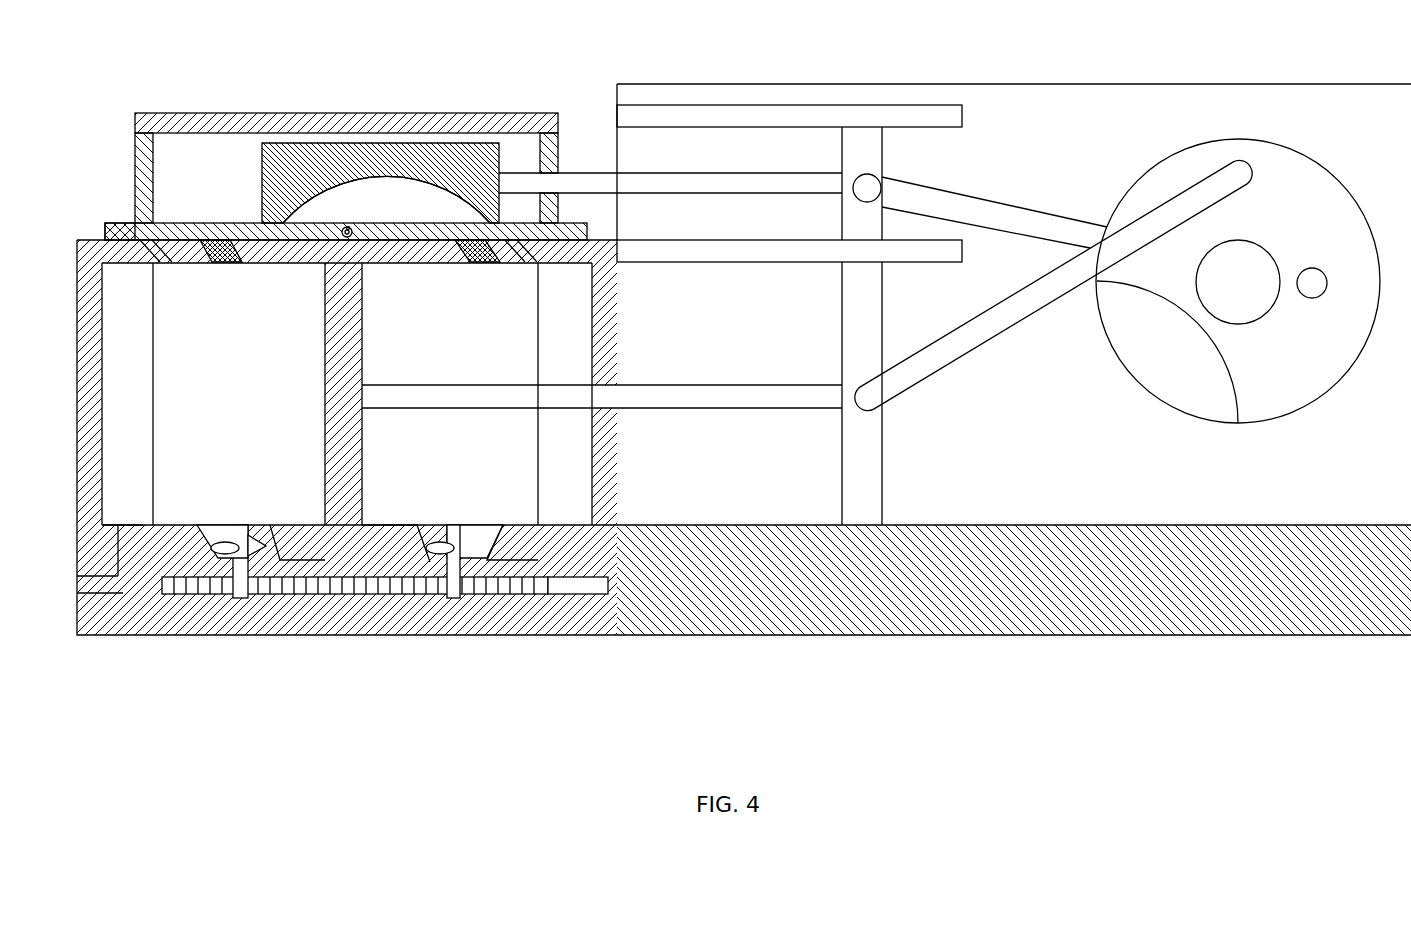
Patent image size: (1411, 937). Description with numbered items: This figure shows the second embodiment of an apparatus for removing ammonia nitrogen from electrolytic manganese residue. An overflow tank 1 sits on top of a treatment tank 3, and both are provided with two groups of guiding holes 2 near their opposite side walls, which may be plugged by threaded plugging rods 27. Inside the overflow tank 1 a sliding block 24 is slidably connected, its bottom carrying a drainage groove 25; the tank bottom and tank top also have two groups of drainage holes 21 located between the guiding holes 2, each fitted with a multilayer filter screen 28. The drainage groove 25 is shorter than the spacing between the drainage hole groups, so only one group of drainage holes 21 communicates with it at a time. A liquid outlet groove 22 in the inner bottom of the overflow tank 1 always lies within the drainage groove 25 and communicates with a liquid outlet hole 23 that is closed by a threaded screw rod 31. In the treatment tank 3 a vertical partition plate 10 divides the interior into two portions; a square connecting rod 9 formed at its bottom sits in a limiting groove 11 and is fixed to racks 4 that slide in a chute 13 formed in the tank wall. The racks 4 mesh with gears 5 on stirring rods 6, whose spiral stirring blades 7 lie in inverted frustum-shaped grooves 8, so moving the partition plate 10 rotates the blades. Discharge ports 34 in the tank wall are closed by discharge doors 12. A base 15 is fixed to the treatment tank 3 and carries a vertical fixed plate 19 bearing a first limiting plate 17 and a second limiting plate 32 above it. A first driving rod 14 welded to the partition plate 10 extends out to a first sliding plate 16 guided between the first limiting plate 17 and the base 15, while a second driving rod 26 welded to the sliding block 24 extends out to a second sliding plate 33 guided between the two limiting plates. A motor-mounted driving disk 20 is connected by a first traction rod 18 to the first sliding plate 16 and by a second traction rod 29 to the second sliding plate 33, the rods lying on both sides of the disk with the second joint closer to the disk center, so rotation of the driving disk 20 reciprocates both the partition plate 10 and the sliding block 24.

The overflow tank 1 is at (137, 143).
The guiding holes 2 is at (137, 198).
The treatment tank 3 is at (117, 628).
The racks 4 is at (177, 595).
The gears 5 is at (220, 598).
The stirring rods 6 is at (236, 602).
The stirring blades 7 is at (247, 535).
The grooves 8 is at (268, 535).
The connecting rod 9 is at (357, 503).
The partition plate 10 is at (368, 528).
The limiting groove 11 is at (505, 562).
The discharge doors 12 is at (563, 512).
The chute 13 is at (565, 588).
The first driving rod 14 is at (648, 398).
The base 15 is at (792, 620).
The first sliding plate 16 is at (860, 517).
The first limiting plate 17 is at (917, 252).
The first traction rod 18 is at (958, 340).
The fixed plate 19 is at (1117, 502).
The driving disk 20 is at (1185, 375).
The drainage holes 21 is at (232, 228).
The liquid outlet groove 22 is at (345, 226).
The liquid outlet hole 23 is at (348, 228).
The sliding block 24 is at (367, 155).
The drainage groove 25 is at (413, 202).
The second driving rod 26 is at (598, 178).
The plugging rods 27 is at (157, 237).
The filter screen 28 is at (213, 235).
The second traction rod 29 is at (1008, 215).
The screw rod 31 is at (343, 232).
The second limiting plate 32 is at (740, 115).
The second sliding plate 33 is at (860, 158).
The discharge ports 34 is at (583, 585).